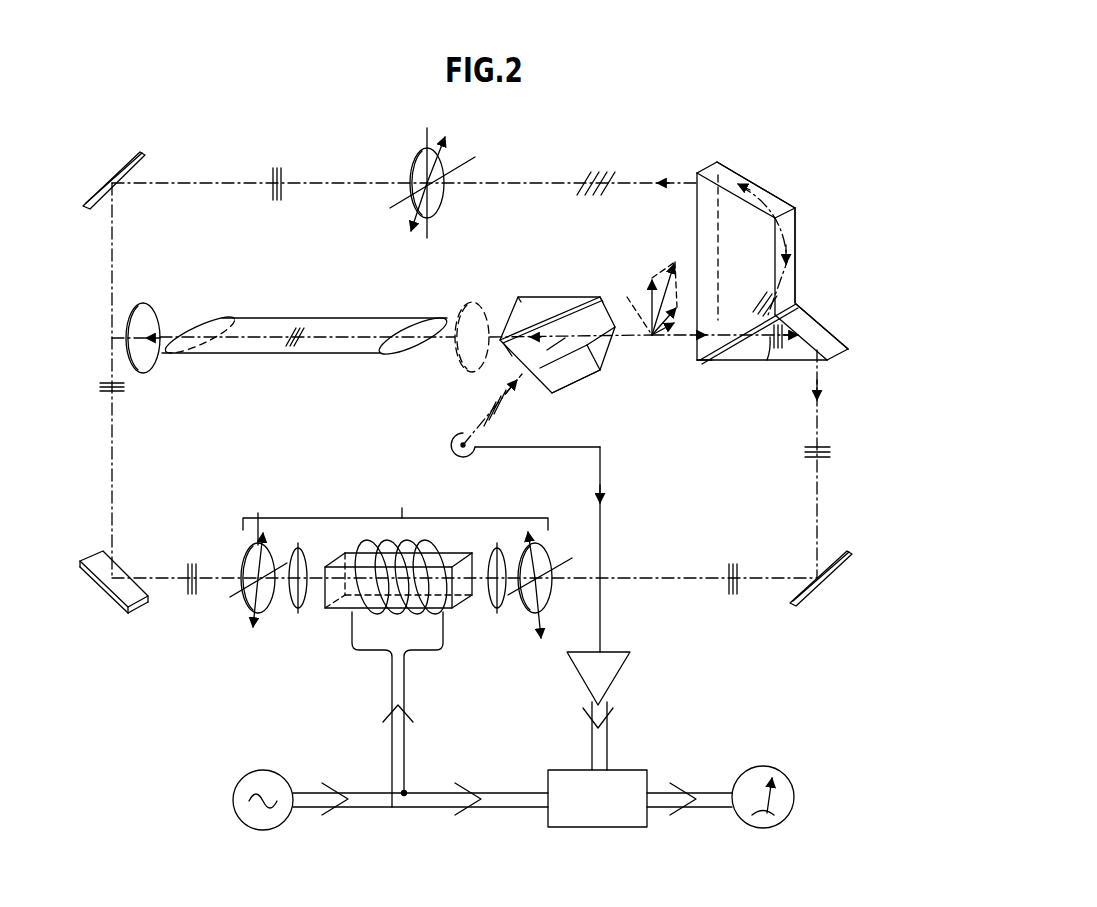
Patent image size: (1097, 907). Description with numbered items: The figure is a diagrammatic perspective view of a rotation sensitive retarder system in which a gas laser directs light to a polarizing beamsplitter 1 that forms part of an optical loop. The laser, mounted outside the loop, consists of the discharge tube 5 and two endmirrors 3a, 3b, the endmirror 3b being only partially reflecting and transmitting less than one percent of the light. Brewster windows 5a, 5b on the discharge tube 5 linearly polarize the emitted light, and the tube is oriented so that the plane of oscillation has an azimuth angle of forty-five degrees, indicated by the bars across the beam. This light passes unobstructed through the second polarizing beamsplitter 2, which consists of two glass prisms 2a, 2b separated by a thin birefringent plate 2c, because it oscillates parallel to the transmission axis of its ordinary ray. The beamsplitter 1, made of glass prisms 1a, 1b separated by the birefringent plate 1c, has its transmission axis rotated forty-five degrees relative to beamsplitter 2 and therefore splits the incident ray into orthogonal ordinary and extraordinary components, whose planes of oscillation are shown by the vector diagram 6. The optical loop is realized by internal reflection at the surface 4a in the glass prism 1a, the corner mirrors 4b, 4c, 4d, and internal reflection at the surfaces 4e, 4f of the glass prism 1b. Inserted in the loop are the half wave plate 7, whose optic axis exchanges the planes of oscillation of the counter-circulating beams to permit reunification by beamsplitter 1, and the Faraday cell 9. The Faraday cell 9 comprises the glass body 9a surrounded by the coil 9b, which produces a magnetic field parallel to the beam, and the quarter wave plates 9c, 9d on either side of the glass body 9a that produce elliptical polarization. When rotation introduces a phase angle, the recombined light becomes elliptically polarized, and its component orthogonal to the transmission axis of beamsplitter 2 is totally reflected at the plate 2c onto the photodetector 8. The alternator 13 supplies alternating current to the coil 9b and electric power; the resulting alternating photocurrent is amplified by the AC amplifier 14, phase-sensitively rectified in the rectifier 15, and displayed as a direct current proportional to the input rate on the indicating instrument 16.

The polarizing beamsplitter 1 is at (778, 271).
The glass prism 1a is at (779, 346).
The glass prism 1b is at (746, 261).
The birefringent plate 1c is at (709, 363).
The second polarizing beamsplitter 2 is at (555, 346).
The glass prism 2a is at (525, 320).
The glass prism 2b is at (572, 373).
The birefringent plate 2c is at (602, 286).
The endmirror 3a is at (143, 326).
The endmirror 3b is at (472, 324).
The internal reflection surface 4a is at (820, 334).
The corner mirror 4b is at (821, 587).
The corner mirror 4c is at (114, 586).
The corner mirror 4d is at (114, 176).
The internal reflection surface 4e is at (738, 187).
The internal reflection surface 4f is at (788, 224).
The gas laser discharge tube 5 is at (306, 339).
The Brewster window 5a is at (201, 332).
The Brewster window 5b is at (398, 343).
The vector diagram 6 is at (661, 303).
The half wave plate 7 is at (432, 183).
The photodetector 8 is at (517, 535).
The Faraday cell 9 is at (397, 645).
The glass body 9a is at (310, 593).
The coil 9b is at (398, 673).
The quarter wave plate 9c is at (255, 580).
The quarter wave plate 9d is at (540, 588).
The alternator 13 is at (263, 788).
The AC amplifier 14 is at (598, 711).
The rectifier 15 is at (597, 798).
The indicating instrument 16 is at (763, 783).